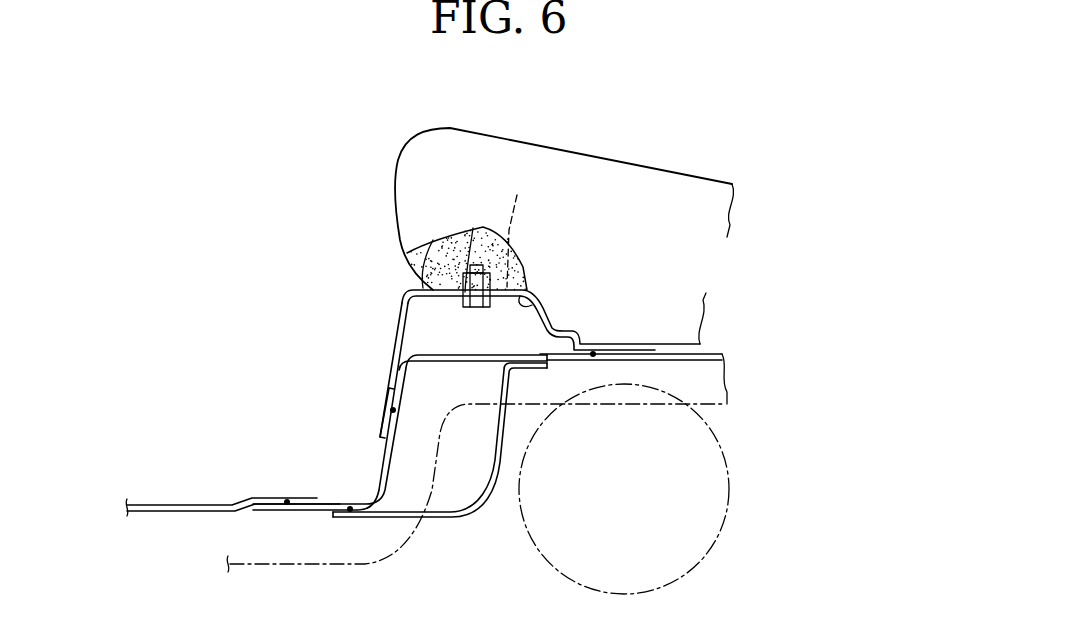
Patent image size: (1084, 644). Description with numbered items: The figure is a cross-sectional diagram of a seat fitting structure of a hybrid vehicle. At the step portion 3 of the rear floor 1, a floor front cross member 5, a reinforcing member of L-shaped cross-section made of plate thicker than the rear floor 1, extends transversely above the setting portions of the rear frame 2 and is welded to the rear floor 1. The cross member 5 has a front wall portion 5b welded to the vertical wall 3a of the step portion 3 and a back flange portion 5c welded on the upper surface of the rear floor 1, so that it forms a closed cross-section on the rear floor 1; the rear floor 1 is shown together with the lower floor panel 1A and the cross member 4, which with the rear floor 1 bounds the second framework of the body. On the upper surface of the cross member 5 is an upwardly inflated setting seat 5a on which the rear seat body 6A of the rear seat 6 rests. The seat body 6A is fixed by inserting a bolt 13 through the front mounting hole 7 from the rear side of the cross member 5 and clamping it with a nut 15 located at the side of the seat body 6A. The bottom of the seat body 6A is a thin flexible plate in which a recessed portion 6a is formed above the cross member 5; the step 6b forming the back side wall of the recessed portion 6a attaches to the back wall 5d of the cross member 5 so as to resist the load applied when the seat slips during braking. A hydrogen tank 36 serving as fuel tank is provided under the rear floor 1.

The rear seat body 6A is at (661, 172).
The rear seat 6 is at (565, 156).
The nut 15 is at (479, 228).
The setting seat (upper base) 5a is at (441, 242).
The front mounting hole 7 is at (520, 226).
The recessed portion 6a is at (527, 273).
The step 6b is at (543, 326).
The bolt 13 is at (477, 307).
The floor front cross member (reinforcing member) 5 is at (406, 298).
The back wall 5d is at (547, 314).
The back flange portion 5c is at (620, 344).
The front wall portion 5b is at (386, 405).
The step portion 3 is at (436, 352).
The vertical wall 3a is at (380, 455).
The rear floor 1 is at (722, 352).
The lower panel 1A is at (183, 503).
The cross member 4 is at (478, 500).
The rear frame 2 is at (384, 561).
The hydrogen tank 36 is at (700, 572).